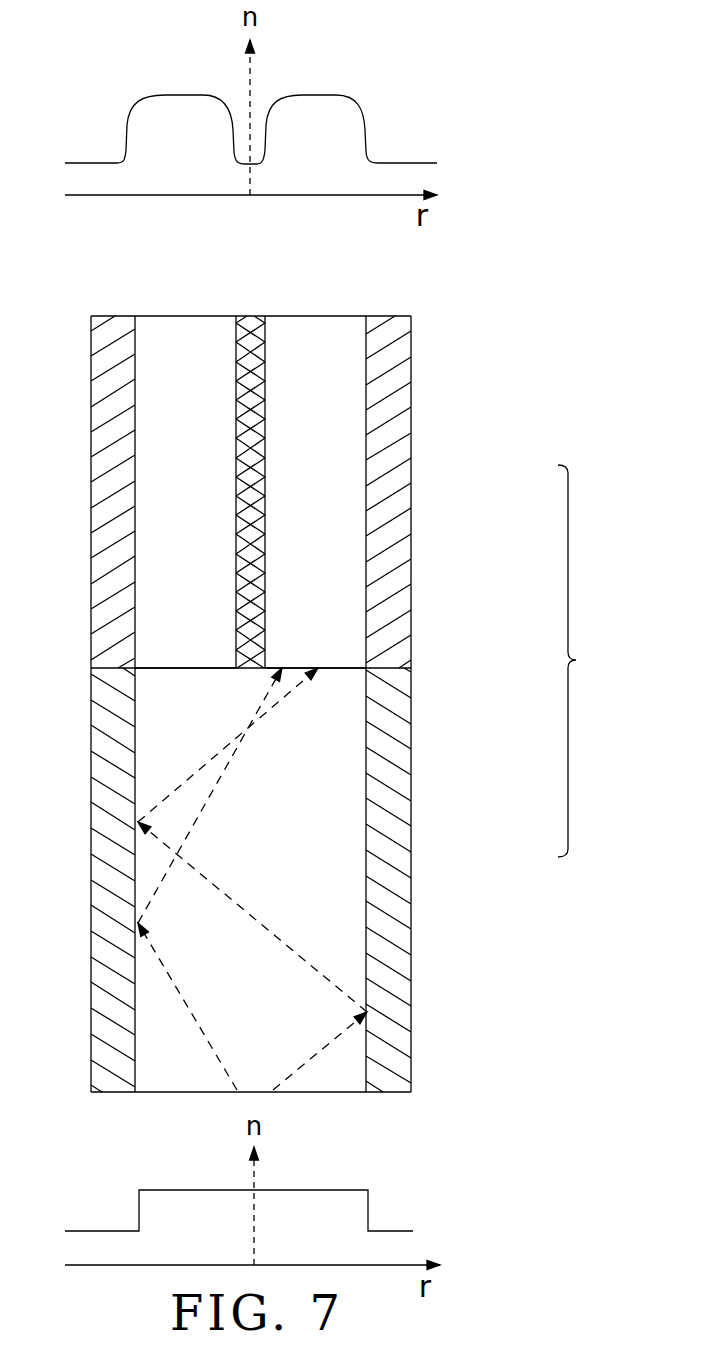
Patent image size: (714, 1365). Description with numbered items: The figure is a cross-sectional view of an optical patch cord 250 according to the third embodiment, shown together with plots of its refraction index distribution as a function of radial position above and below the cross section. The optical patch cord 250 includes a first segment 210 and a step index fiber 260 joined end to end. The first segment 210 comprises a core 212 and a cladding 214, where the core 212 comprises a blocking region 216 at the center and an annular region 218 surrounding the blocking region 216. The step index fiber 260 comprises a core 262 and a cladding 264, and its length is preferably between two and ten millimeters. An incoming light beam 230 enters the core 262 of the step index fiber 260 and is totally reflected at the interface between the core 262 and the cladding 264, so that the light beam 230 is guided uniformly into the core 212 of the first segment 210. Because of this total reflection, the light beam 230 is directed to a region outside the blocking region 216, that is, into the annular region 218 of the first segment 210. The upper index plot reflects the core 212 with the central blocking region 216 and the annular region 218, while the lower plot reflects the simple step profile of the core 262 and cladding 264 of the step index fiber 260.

The first segment 210 is at (431, 497).
The core 212 is at (251, 165).
The cladding 214 is at (393, 330).
The blocking region 216 is at (260, 330).
The annular region 218 is at (310, 258).
The light beam 230 is at (340, 1037).
The optical patch cord 250 is at (594, 661).
The step index fiber 260 is at (434, 865).
The core 262 is at (170, 1067).
The cladding 264 is at (398, 1052).